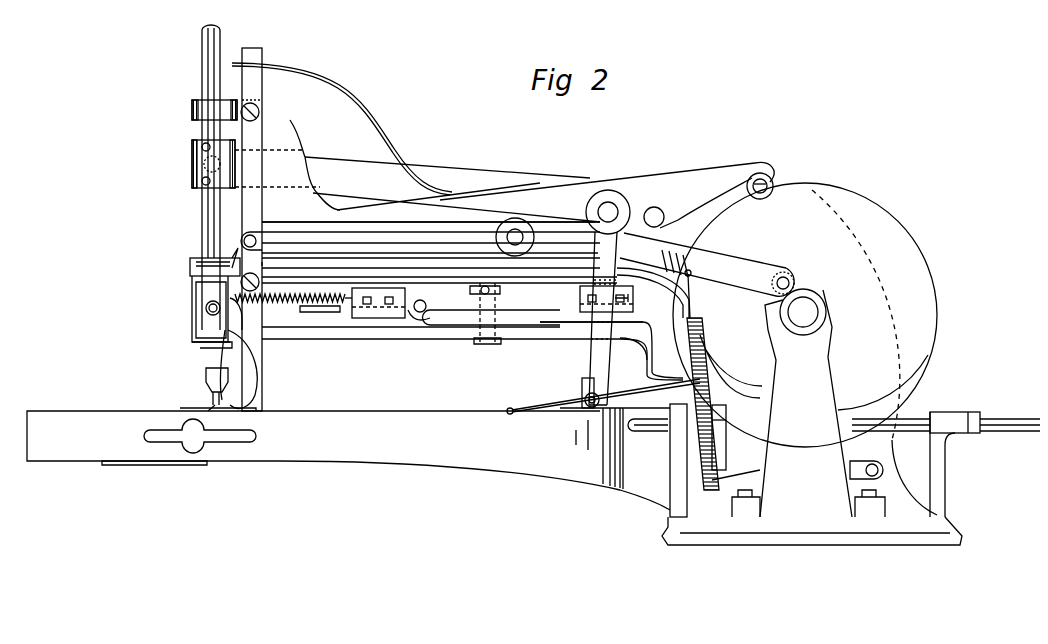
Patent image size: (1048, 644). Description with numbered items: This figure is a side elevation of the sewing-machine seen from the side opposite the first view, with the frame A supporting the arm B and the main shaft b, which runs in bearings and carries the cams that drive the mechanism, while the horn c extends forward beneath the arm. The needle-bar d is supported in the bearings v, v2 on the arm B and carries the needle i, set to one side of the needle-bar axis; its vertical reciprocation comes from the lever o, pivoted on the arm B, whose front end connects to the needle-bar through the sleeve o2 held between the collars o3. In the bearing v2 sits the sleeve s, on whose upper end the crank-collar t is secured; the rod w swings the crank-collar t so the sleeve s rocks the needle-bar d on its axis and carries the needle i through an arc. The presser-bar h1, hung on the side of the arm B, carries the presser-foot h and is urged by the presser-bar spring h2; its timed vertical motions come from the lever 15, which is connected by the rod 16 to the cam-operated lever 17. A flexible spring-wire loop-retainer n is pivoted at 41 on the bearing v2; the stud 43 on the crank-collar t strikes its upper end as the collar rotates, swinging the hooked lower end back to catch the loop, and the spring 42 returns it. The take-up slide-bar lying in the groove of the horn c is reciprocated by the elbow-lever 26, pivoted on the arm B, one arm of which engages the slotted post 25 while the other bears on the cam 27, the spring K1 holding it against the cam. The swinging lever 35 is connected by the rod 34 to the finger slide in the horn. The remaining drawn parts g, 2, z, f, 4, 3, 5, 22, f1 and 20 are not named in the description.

The horn c is at (348, 459).
The presser-foot h is at (262, 393).
The needle-bar d is at (202, 57).
The needle-bar bearing v is at (192, 105).
The sleeve o2 is at (192, 165).
The collar o3 is at (202, 146).
The presser-bar h1 is at (313, 108).
The presser-bar spring h2 is at (415, 152).
The lever o is at (532, 219).
The arm B is at (431, 209).
The swinging lever 35 is at (764, 176).
The lever 15 is at (463, 231).
The stud 43 is at (242, 250).
The rod w is at (420, 274).
The crank-collar t is at (190, 264).
The needle-bar bearing v2 is at (196, 295).
The pivot 41 is at (206, 308).
The loop-retainer n is at (228, 330).
The sleeve s is at (200, 345).
The needle i is at (238, 369).
The needle clamp g is at (206, 383).
The spring 42 is at (280, 303).
The slide bar 2 is at (638, 302).
The slide block z is at (492, 301).
The guide rail f is at (424, 338).
The pin 4 is at (417, 312).
The feed bar 3 is at (491, 317).
The feed pin 5 is at (494, 345).
The rod 34 is at (548, 401).
The slotted post 25 is at (582, 383).
The elbow-lever 26 is at (690, 297).
The drive wheel 22 is at (805, 315).
The cam 27 is at (875, 305).
The main shaft b is at (803, 312).
The spring K1 is at (712, 375).
The frame opening f1 is at (652, 352).
The frame A is at (812, 417).
The shaft 20 is at (652, 432).
The rod 16 is at (724, 443).
The lever 17 is at (736, 473).